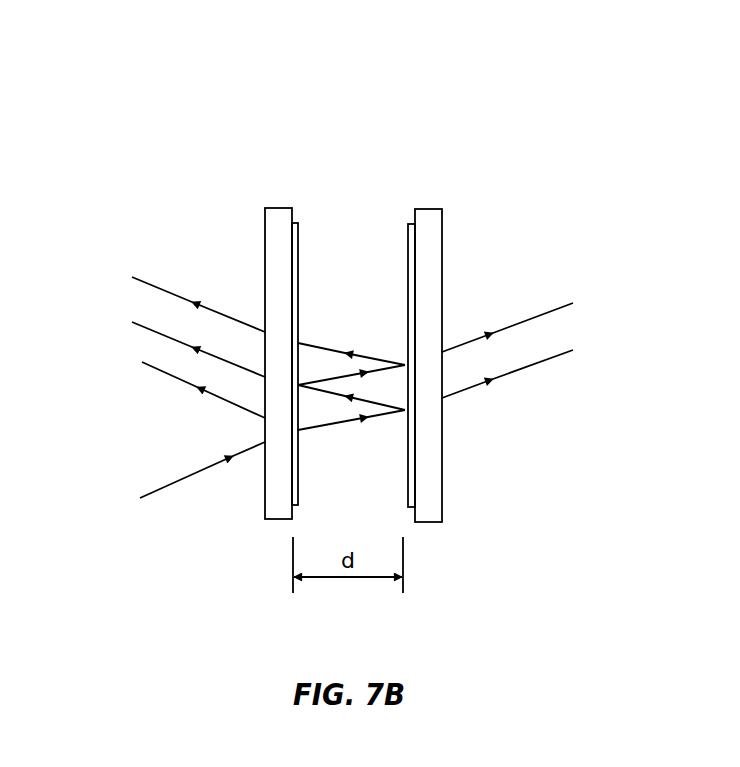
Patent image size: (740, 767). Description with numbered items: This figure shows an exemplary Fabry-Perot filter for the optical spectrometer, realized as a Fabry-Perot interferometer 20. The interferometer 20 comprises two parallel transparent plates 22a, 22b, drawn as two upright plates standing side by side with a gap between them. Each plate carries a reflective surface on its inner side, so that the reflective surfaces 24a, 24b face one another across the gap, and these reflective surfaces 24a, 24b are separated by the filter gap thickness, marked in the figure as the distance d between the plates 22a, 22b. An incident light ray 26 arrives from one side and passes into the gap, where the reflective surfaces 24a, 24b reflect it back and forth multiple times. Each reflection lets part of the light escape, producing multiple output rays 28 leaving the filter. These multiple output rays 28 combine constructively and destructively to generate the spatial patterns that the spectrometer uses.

The Fabry-Perot interferometer 20 is at (275, 287).
The transparent plate 22a is at (285, 207).
The transparent plate 22b is at (423, 208).
The reflective surface 24a is at (298, 273).
The reflective surface 24b is at (407, 320).
The incident light ray 26 is at (163, 488).
The output rays 28 is at (467, 390).